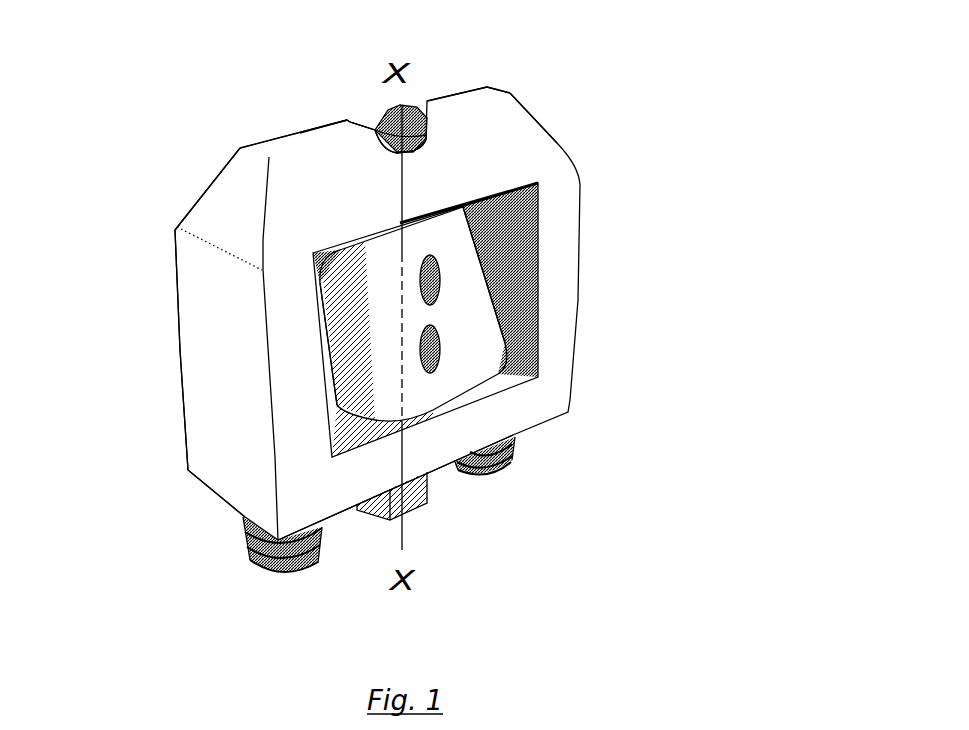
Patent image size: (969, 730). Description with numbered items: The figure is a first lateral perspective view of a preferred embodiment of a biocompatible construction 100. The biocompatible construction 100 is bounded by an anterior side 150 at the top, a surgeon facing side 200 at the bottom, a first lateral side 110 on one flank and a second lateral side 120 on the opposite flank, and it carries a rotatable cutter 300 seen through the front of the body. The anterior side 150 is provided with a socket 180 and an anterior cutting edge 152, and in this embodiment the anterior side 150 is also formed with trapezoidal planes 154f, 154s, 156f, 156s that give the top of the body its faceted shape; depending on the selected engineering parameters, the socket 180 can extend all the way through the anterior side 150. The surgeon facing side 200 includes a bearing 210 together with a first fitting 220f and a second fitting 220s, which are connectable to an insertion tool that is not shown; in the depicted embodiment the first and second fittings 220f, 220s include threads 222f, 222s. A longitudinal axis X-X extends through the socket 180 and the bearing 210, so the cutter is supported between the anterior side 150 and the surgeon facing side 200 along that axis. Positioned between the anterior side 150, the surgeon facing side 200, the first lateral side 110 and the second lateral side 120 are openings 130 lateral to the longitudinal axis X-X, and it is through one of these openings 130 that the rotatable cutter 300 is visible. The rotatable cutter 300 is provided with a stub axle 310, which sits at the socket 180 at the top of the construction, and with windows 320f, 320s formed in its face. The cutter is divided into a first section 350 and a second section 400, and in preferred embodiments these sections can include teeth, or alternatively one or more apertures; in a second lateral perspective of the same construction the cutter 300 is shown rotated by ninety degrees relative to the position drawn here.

The biocompatible construction 100 is at (577, 93).
The first lateral side 110 is at (208, 317).
The second lateral side 120 is at (575, 330).
The openings 130 is at (507, 220).
The anterior side 150 is at (308, 117).
The anterior cutting edge 152 is at (280, 135).
The trapezoidal plane 154f is at (240, 190).
The trapezoidal plane 154s is at (543, 122).
The trapezoidal plane 156f is at (330, 100).
The trapezoidal plane 156s is at (523, 148).
The socket 180 is at (420, 120).
The stub axle 310 is at (403, 127).
The rotatable cutter 300 is at (503, 338).
The window 320f is at (432, 282).
The window 320s is at (433, 352).
The first section 350 is at (385, 288).
The second section 400 is at (470, 285).
The bearing 210 is at (388, 413).
The surgeon facing side 200 is at (468, 515).
The first fitting 220f is at (253, 570).
The threads 222f is at (282, 548).
The second fitting 220s is at (530, 467).
The threads 222s is at (497, 473).